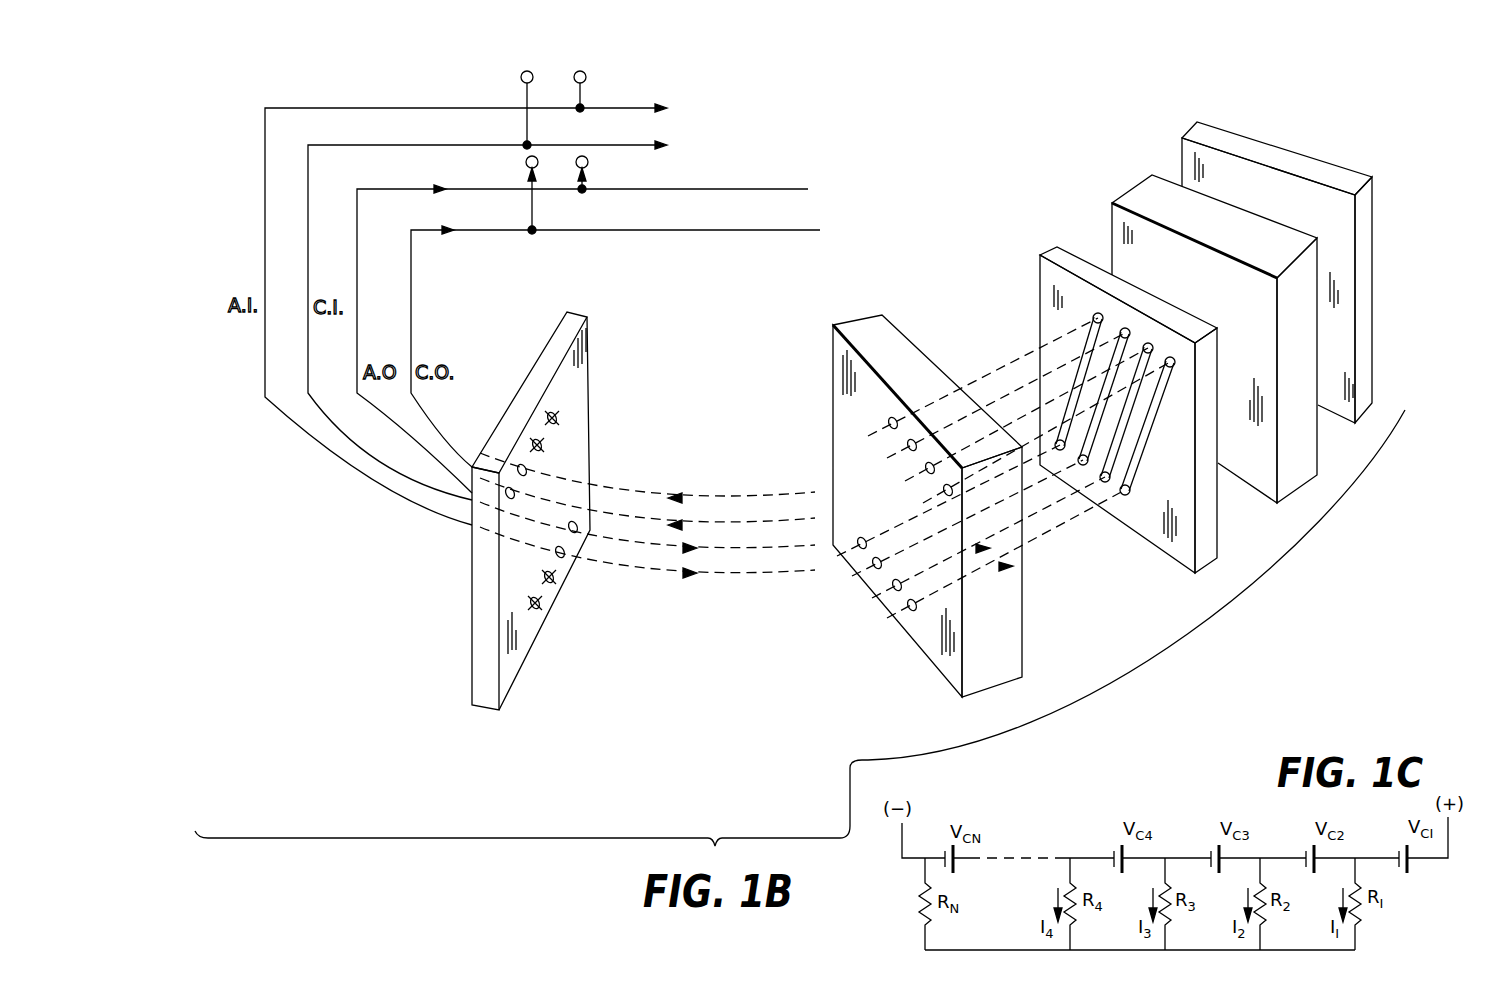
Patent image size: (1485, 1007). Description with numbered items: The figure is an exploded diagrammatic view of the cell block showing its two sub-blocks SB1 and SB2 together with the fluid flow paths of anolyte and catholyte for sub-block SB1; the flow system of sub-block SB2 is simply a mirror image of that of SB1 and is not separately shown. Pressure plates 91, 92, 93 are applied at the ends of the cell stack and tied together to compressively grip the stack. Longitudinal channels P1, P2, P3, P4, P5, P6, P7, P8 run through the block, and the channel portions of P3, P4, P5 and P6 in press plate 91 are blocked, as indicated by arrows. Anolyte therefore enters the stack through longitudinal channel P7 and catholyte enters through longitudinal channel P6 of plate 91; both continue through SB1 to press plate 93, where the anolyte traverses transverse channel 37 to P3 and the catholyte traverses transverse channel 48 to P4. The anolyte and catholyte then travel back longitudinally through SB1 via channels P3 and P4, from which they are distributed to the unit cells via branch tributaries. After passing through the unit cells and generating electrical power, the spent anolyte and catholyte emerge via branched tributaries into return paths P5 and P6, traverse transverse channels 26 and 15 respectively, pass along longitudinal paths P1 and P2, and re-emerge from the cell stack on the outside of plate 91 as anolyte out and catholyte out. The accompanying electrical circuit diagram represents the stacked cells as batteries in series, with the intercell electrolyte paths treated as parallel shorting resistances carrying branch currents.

The press plate 91 is at (477, 595).
The pressure plate 92 is at (1372, 222).
The press plate 93 is at (1040, 282).
The transverse channel 15 is at (1158, 418).
The transverse channel 26 is at (1125, 440).
The transverse channel 37 is at (1104, 358).
The transverse channel 48 is at (1088, 355).
The sub-block SB1 is at (862, 322).
The sub-block SB2 is at (1397, 297).
The longitudinal channel P1 is at (510, 488).
The longitudinal channel P2 is at (520, 465).
The longitudinal channel P3 is at (535, 440).
The longitudinal channel P4 is at (548, 412).
The longitudinal channel P5 is at (538, 608).
The longitudinal channel P6 is at (552, 583).
The longitudinal channel P7 is at (562, 558).
The longitudinal channel P8 is at (575, 533).